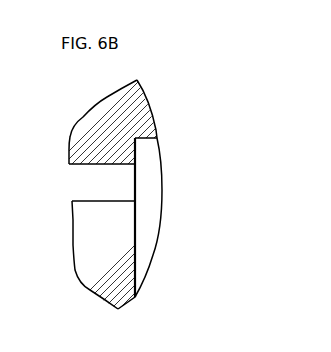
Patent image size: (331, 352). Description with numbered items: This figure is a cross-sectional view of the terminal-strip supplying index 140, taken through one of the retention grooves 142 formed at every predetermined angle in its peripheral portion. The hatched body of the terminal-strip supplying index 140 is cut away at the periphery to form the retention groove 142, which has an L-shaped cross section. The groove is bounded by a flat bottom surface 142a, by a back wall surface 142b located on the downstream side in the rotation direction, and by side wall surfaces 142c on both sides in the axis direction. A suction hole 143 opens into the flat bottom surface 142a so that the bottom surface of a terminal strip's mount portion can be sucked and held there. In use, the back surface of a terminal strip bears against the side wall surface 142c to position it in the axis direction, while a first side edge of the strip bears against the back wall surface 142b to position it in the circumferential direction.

The terminal-strip supplying index 140 is at (88, 115).
The suction hole 143 is at (83, 182).
The retention groove 142 is at (203, 223).
The flat bottom surface 142a is at (136, 225).
The back wall surface 142b is at (140, 139).
The side wall surface 142c is at (152, 187).